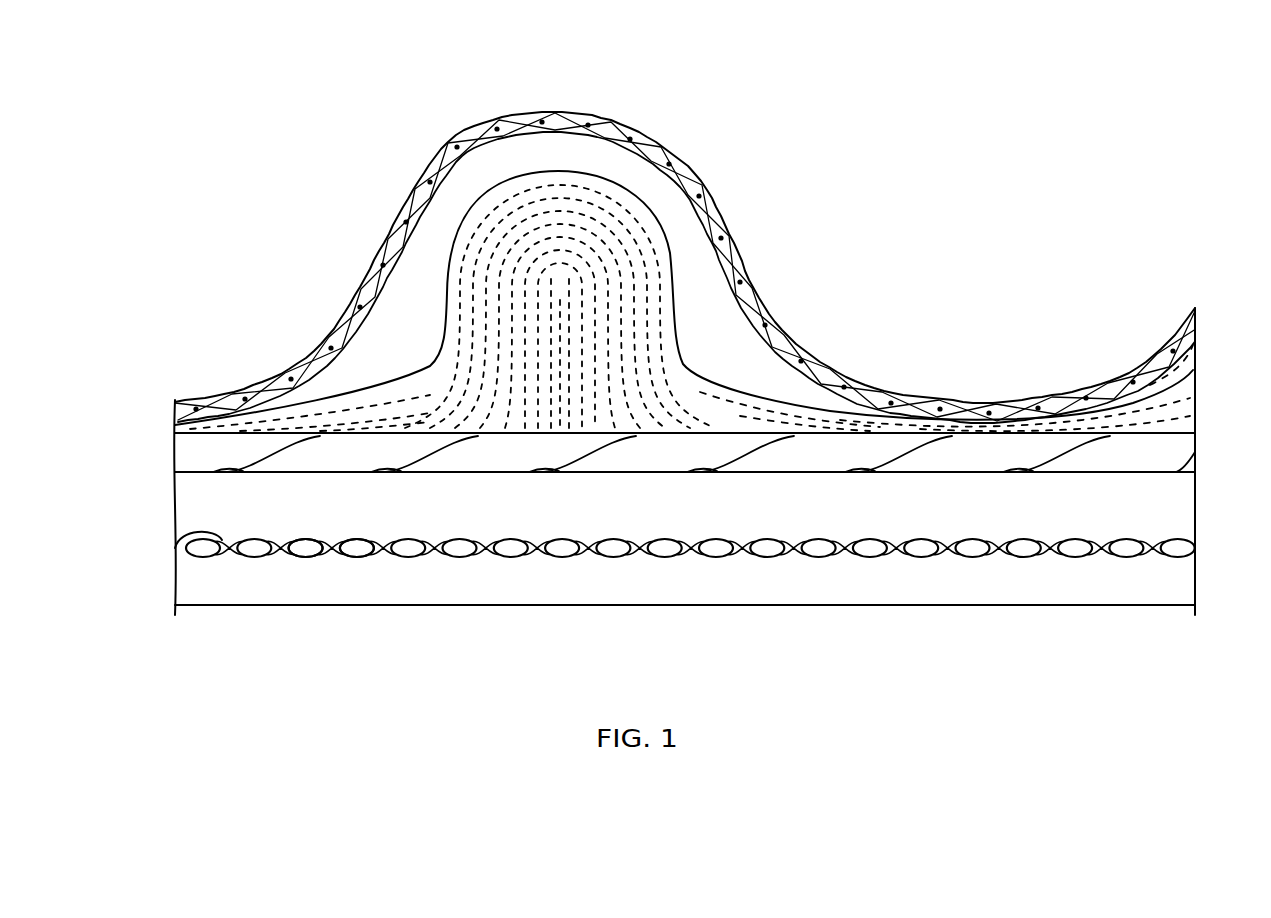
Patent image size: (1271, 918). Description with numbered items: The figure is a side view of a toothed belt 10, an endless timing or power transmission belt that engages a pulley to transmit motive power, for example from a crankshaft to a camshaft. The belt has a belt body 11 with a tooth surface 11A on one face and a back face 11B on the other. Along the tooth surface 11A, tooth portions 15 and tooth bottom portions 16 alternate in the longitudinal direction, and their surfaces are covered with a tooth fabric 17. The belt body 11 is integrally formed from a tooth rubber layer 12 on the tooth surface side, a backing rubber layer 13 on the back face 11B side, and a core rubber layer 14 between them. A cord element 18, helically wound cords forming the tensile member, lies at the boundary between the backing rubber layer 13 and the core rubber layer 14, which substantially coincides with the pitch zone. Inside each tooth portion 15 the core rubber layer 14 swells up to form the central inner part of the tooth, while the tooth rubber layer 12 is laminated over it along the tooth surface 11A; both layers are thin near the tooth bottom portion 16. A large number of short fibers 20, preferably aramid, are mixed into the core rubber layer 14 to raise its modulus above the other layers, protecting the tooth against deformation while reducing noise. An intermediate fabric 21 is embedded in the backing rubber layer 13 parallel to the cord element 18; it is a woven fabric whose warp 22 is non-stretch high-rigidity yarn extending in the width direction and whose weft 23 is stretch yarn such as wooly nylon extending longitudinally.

The toothed belt 10 is at (857, 223).
The belt body 11 is at (300, 260).
The tooth surface 11A is at (750, 278).
The back face 11B is at (513, 604).
The tooth rubber layer 12 is at (373, 337).
The backing rubber layer 13 is at (202, 497).
The core rubber layer 14 is at (337, 420).
The tooth portion 15 is at (592, 92).
The tooth bottom portion 16 is at (980, 373).
The tooth fabric 17 is at (462, 135).
The cord element 18 is at (183, 460).
The short fiber 20 is at (597, 197).
The intermediate fabric 21 is at (610, 565).
The warp 22 is at (353, 555).
The weft 23 is at (180, 539).